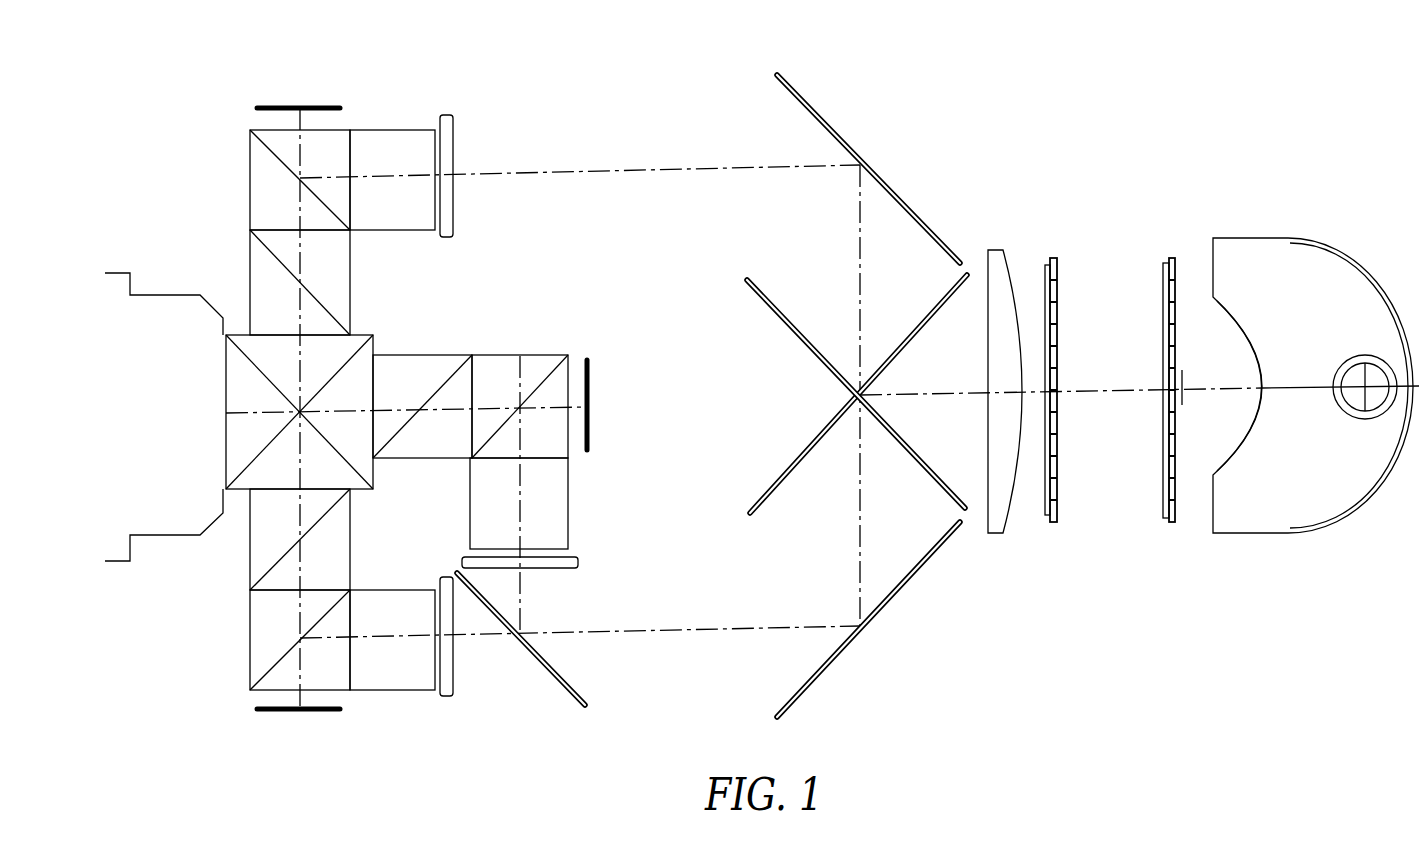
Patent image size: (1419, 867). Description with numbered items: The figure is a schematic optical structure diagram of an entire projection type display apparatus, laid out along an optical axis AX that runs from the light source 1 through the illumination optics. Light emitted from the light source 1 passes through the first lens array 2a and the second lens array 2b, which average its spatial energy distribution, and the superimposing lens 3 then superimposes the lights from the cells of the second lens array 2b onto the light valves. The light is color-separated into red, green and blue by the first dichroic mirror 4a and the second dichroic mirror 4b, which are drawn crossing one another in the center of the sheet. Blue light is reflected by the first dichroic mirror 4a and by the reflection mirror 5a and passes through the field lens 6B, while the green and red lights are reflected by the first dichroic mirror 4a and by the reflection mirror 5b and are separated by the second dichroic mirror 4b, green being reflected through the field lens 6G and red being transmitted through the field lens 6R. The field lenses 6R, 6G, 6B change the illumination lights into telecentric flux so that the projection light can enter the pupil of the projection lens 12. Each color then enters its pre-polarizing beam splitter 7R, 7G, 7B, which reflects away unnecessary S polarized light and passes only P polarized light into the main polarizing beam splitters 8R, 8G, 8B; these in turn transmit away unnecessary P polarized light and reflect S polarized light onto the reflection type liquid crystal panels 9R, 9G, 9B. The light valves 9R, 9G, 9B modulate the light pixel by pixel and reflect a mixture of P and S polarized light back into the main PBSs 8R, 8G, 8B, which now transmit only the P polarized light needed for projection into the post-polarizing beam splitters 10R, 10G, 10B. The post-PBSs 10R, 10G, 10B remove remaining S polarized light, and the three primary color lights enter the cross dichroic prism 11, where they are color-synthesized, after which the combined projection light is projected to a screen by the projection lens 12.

The light source 1 is at (1248, 233).
The first lens array 2a is at (1171, 258).
The second lens array 2b is at (1052, 258).
The superimposing lens 3 is at (1003, 250).
The first dichroic mirror 4a is at (747, 280).
The second dichroic mirror 4b is at (588, 702).
The reflection mirror 5a is at (810, 104).
The reflection mirror 5b is at (930, 557).
The field lens 6B is at (447, 115).
The field lens 6G is at (579, 560).
The field lens 6R is at (449, 696).
The pre-polarizing beam splitter 7B is at (386, 128).
The pre-polarizing beam splitter 7G is at (569, 505).
The pre-polarizing beam splitter 7R is at (396, 691).
The main polarizing beam splitter 8B is at (250, 190).
The main polarizing beam splitter 8G is at (520, 356).
The main polarizing beam splitter 8R is at (250, 646).
The reflection type light valve 9B is at (256, 110).
The reflection type light valve 9G is at (589, 452).
The reflection type light valve 9R is at (255, 710).
The post-polarizing beam splitter 10B is at (250, 268).
The post-polarizing beam splitter 10G is at (440, 356).
The post-polarizing beam splitter 10R is at (250, 562).
The cross dichroic prism 11 is at (373, 338).
The projection lens 12 is at (203, 428).
The optical axis AX is at (1083, 393).